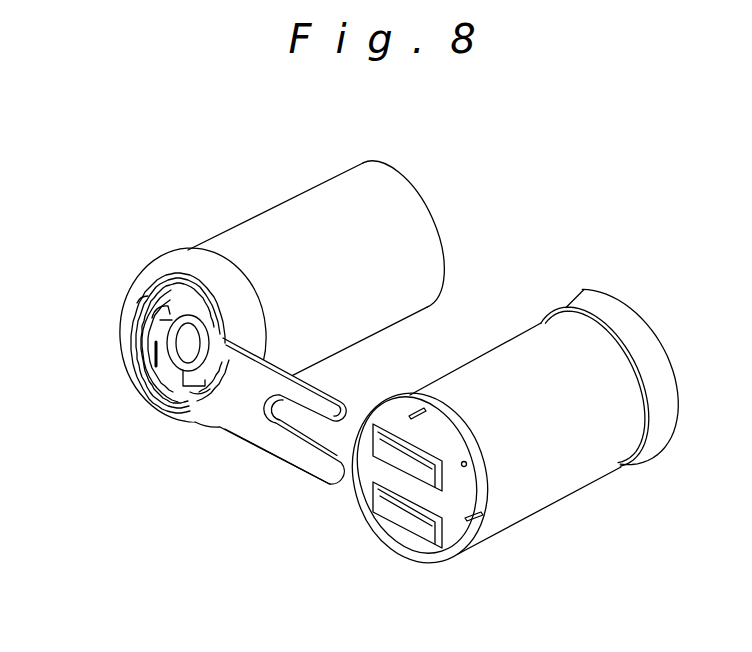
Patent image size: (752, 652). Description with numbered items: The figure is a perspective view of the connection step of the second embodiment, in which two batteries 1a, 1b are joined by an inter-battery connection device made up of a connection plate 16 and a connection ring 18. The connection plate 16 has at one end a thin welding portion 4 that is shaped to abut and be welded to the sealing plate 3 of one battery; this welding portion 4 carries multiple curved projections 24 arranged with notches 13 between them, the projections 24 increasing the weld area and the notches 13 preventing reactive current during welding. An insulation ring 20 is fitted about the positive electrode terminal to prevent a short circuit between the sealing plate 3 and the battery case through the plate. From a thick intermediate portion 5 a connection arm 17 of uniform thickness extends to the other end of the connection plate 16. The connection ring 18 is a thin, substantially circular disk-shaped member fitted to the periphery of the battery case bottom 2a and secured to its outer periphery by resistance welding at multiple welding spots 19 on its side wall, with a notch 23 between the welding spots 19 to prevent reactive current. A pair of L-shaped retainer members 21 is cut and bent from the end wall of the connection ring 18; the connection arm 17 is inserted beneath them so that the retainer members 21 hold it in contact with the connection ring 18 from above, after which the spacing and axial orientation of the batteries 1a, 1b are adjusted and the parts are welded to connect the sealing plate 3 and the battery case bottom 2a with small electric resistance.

The battery 1a is at (568, 465).
The battery 1b is at (283, 232).
The battery case bottom 2a is at (497, 517).
The sealing plate 3 is at (143, 303).
The welding portion 4 is at (143, 365).
The intermediate portion 5 is at (246, 436).
The notch 13 is at (155, 332).
The connection plate 16 is at (239, 436).
The connection arm 17 is at (313, 407).
The connection ring 18 is at (473, 538).
The welding spot 19 is at (469, 466).
The insulation ring 20 is at (185, 263).
The retainer member 21 is at (407, 463).
The notch 23 is at (413, 406).
The curved projection 24 is at (165, 370).